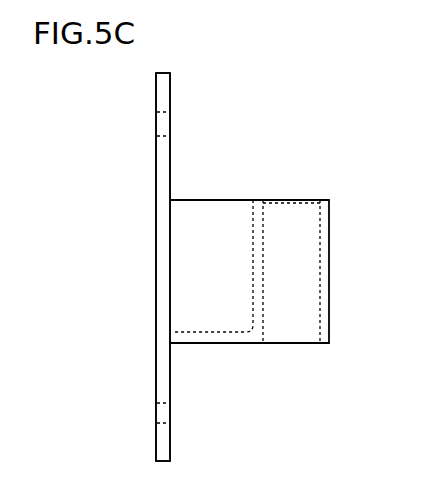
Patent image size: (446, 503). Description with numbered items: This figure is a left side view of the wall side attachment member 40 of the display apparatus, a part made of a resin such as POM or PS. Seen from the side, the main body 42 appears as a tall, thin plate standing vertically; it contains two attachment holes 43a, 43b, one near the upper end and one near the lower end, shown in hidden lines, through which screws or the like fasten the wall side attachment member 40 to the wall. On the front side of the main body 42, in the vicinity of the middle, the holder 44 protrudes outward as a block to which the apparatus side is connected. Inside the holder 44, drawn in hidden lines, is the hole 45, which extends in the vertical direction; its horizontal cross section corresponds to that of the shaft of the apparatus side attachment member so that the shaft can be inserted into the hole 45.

The wall side attachment member 40 is at (174, 86).
The main body 42 is at (171, 171).
The attachment hole 43a is at (171, 121).
The attachment hole 43b is at (171, 412).
The holder 44 is at (331, 270).
The hole 45 is at (322, 233).